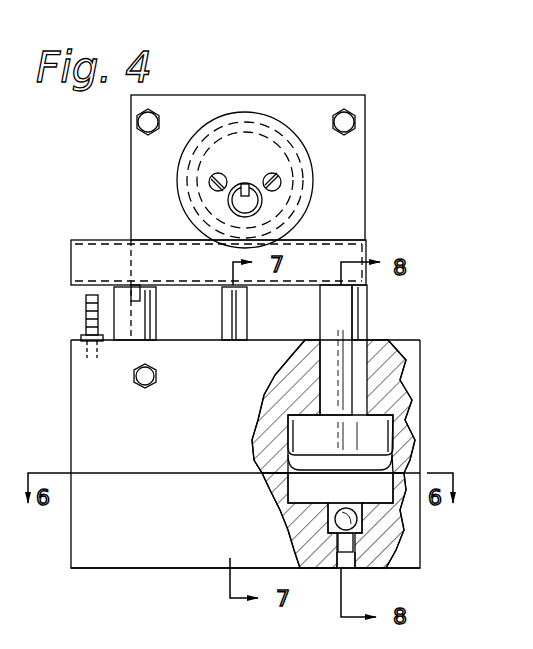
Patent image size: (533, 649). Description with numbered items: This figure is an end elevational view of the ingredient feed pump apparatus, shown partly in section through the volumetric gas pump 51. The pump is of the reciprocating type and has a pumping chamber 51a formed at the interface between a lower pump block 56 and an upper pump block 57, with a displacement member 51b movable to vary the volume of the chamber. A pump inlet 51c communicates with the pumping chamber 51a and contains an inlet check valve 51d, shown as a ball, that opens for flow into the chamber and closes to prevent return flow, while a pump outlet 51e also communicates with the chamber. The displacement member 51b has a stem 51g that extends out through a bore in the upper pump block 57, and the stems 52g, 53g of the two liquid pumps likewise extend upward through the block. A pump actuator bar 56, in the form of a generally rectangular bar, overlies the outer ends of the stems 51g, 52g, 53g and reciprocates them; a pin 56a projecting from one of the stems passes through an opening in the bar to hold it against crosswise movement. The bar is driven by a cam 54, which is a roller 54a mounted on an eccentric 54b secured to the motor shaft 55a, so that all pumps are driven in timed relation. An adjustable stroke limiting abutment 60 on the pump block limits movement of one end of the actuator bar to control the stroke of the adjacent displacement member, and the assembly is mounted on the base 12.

The base 12 is at (130, 574).
The volumetric gas pump 51 is at (248, 446).
The pumping chamber 51a is at (396, 475).
The displacement member 51b is at (290, 418).
The pump inlet 51c is at (343, 565).
The inlet check valve 51d is at (335, 520).
The pump outlet 51e is at (317, 476).
The stem 51g is at (366, 330).
The stem 52g is at (156, 305).
The stem 53g is at (250, 322).
The cam 54 is at (258, 95).
The roller 54a is at (278, 125).
The eccentric 54b is at (225, 125).
The motor shaft 55a is at (258, 204).
The pump actuator bar 56 is at (318, 250).
The pin 56a is at (142, 242).
The upper pump block 57 is at (72, 390).
The adjustable stroke limiting abutment 60 is at (86, 318).